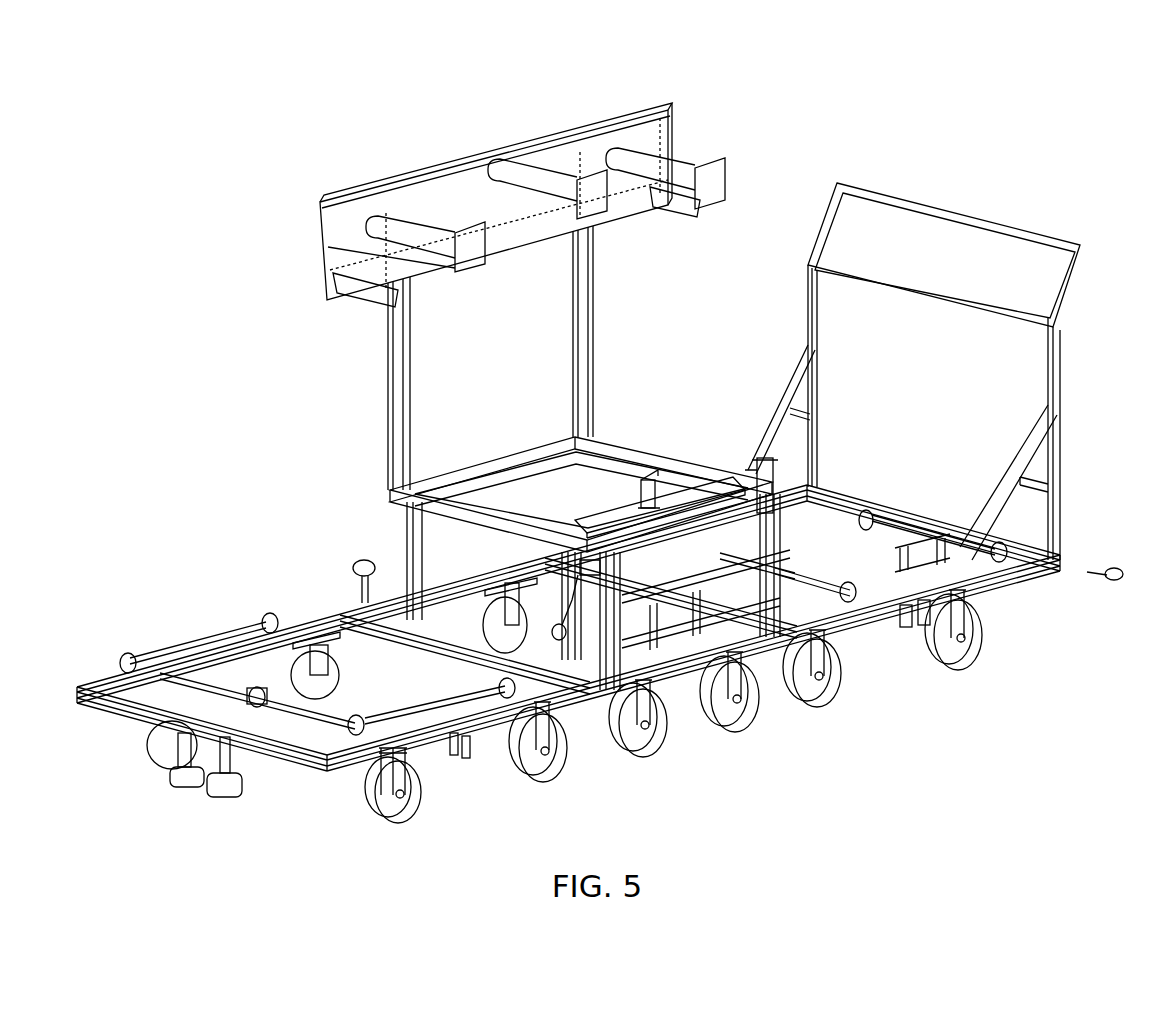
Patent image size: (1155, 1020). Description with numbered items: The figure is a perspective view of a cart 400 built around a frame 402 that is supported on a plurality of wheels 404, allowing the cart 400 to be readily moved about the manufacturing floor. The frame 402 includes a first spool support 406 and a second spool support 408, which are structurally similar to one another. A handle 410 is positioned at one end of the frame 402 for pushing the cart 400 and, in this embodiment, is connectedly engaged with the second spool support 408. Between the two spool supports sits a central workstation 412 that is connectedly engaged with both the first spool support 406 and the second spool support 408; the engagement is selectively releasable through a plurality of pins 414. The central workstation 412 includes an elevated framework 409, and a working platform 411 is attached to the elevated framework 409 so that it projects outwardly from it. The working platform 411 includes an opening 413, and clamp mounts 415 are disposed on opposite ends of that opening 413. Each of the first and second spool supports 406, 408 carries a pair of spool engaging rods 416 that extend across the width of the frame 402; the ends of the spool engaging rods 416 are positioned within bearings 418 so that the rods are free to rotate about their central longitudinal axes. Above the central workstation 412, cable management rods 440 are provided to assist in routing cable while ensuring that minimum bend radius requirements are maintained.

The cart 400 is at (872, 94).
The frame 402 is at (287, 752).
The wheels 404 is at (553, 770).
The first spool support 406 is at (218, 650).
The second spool support 408 is at (885, 610).
The elevated framework 409 is at (507, 455).
The handle 410 is at (960, 217).
The working platform 411 is at (700, 493).
The central workstation 412 is at (677, 667).
The opening 413 is at (695, 505).
The pins 414 is at (355, 562).
The clamp mounts 415 is at (643, 488).
The spool engaging rods 416 is at (928, 535).
The bearings 418 is at (1000, 548).
The cable management rods 440 is at (413, 225).